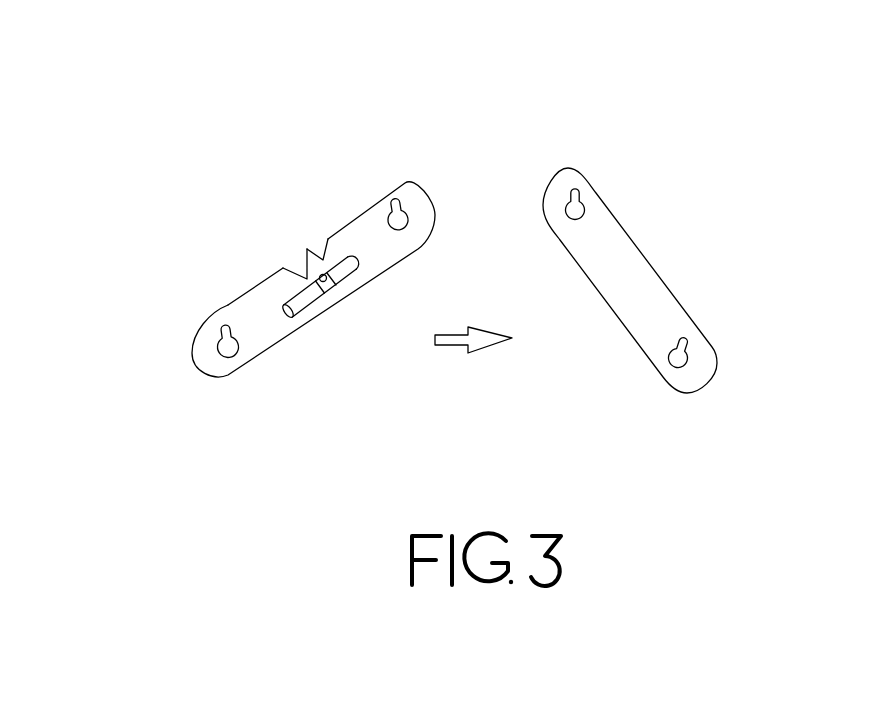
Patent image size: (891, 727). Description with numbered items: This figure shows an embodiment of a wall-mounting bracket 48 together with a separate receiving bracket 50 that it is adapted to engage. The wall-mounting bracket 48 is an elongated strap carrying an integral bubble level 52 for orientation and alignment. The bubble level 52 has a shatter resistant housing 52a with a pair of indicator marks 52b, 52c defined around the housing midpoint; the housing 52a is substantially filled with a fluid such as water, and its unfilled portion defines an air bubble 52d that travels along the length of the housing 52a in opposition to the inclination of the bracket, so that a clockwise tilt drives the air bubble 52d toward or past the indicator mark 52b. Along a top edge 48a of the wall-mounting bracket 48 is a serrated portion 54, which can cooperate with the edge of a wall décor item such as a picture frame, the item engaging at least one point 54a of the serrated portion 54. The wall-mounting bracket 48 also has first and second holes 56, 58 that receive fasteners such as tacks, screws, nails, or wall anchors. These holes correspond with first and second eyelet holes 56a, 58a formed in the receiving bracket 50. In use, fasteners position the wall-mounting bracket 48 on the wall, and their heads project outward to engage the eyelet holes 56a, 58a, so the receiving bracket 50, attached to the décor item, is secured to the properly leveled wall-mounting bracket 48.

The wall-mounting bracket 48 is at (405, 118).
The top edge 48a is at (230, 303).
The receiving bracket 50 is at (597, 125).
The bubble level 52 is at (300, 312).
The shatter resistant housing 52a is at (357, 260).
The indicator mark 52b is at (335, 300).
The indicator mark 52c is at (347, 296).
The air bubble 52d is at (304, 278).
The serrated portion 54 is at (321, 215).
The point 54a is at (308, 248).
The first hole 56 is at (228, 350).
The first eyelet hole 56a is at (686, 364).
The second hole 58 is at (400, 230).
The second eyelet hole 58a is at (572, 214).